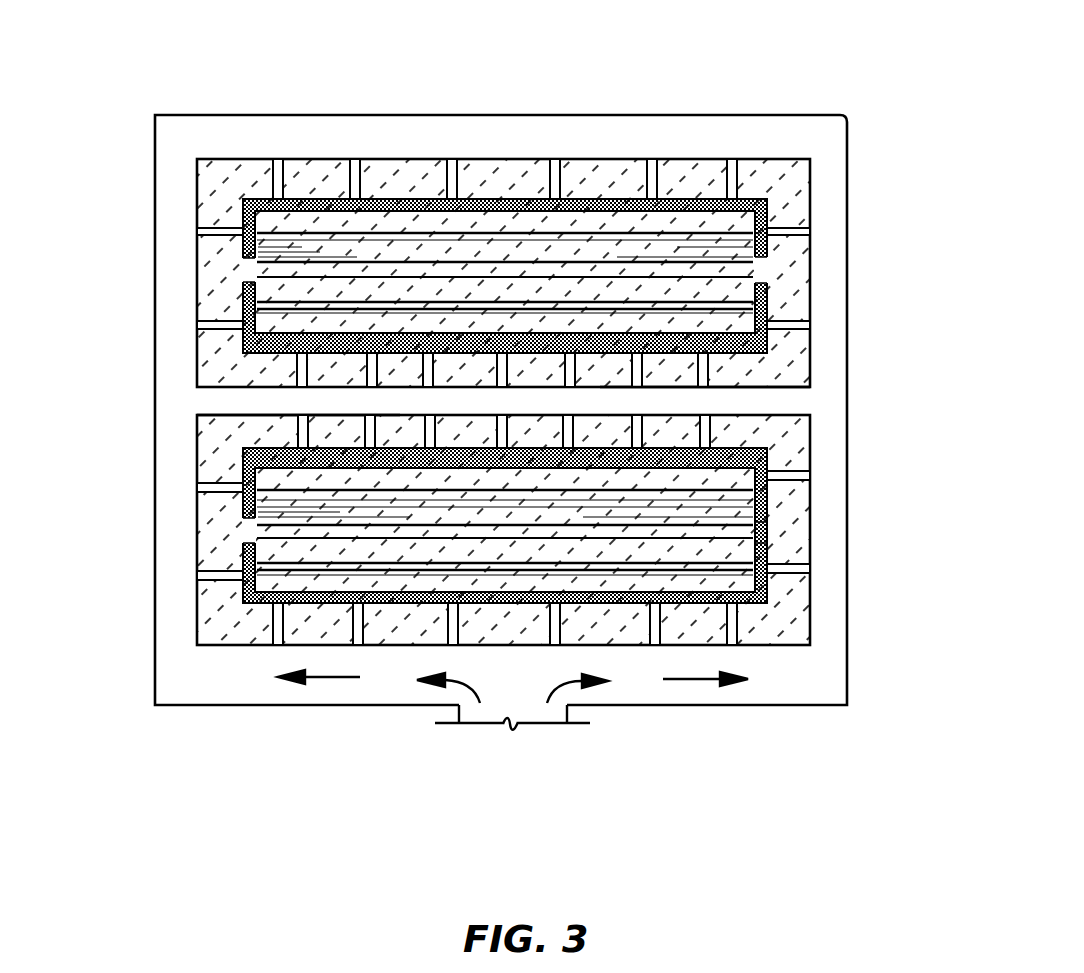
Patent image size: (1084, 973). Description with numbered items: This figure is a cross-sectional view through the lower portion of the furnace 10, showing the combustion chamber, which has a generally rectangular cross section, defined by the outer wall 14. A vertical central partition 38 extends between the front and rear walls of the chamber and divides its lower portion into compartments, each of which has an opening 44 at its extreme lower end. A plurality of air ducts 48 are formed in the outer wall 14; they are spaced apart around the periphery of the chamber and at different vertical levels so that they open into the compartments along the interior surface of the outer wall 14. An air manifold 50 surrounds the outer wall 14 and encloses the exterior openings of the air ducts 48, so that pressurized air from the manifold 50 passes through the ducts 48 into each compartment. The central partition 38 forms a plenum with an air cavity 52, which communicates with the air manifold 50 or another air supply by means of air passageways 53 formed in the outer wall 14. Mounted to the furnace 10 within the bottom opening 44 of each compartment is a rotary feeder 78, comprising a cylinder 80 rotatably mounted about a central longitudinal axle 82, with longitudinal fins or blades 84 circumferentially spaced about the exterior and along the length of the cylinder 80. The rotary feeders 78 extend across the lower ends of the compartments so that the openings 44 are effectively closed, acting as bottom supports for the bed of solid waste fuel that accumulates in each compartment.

The furnace 10 is at (505, 404).
The outer wall 14 is at (528, 168).
The central partition 38 is at (458, 442).
The opening 44 is at (255, 452).
The air ducts 48 is at (355, 630).
The air manifold 50 is at (848, 570).
The air cavity 52 is at (765, 403).
The air passageways 53 is at (223, 398).
The rotary feeder 78 is at (673, 223).
The cylinder 80 is at (737, 225).
The central longitudinal axle 82 is at (760, 264).
The fins 84 is at (655, 240).